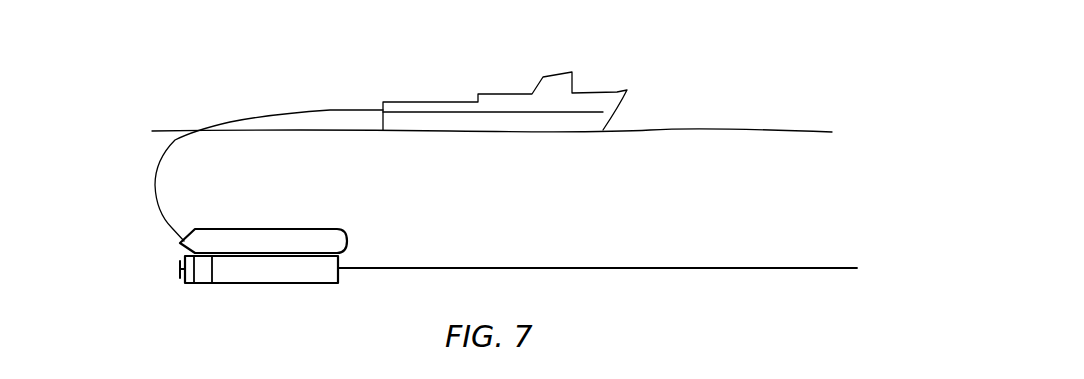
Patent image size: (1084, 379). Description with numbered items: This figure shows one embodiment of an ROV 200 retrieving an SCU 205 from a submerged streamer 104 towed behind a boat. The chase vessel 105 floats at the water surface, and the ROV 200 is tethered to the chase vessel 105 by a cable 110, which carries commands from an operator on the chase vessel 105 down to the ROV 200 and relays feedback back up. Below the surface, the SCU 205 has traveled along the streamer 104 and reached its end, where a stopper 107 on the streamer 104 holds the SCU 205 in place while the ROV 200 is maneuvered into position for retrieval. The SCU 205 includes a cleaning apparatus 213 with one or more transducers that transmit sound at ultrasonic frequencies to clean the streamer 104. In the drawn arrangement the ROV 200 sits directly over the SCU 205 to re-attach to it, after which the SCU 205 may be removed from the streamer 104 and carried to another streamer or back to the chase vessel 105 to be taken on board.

The streamer 104 is at (697, 268).
The chase vessel 105 is at (552, 76).
The stopper 107 is at (172, 266).
The cable 110 is at (298, 110).
The ROV 200 is at (290, 229).
The SCU 205 is at (320, 283).
The cleaning apparatus 213 is at (202, 283).